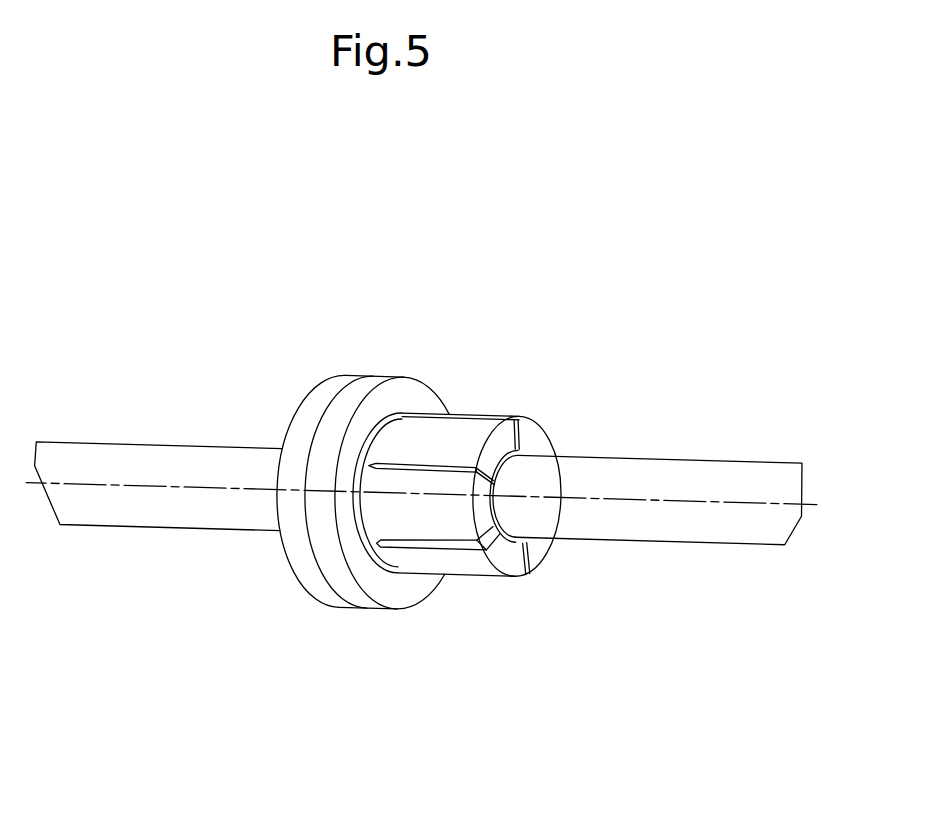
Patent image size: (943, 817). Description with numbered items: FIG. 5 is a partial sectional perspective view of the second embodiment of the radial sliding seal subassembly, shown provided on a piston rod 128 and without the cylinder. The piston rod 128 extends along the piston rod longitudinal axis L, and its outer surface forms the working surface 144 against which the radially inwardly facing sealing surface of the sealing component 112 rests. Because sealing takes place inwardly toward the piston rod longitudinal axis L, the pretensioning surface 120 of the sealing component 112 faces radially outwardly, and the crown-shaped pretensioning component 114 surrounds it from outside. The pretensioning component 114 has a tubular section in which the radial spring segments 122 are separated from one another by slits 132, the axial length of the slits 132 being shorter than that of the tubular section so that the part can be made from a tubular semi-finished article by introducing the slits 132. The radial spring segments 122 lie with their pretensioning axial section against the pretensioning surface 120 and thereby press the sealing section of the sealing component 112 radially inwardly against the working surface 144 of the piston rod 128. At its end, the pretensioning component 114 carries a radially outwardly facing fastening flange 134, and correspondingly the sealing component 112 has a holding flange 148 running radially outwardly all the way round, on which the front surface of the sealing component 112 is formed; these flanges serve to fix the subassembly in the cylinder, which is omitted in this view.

The sealing component 112 is at (325, 605).
The pretensioning component 114 is at (450, 602).
The pretensioning surface 120 is at (546, 428).
The radial spring segments 122 is at (530, 427).
The piston rod 128 is at (152, 512).
The slits 132 is at (447, 468).
The fastening flange 134 is at (373, 400).
The working surface 144 is at (587, 540).
The holding flange 148 is at (297, 545).
The piston rod longitudinal axis L is at (807, 505).